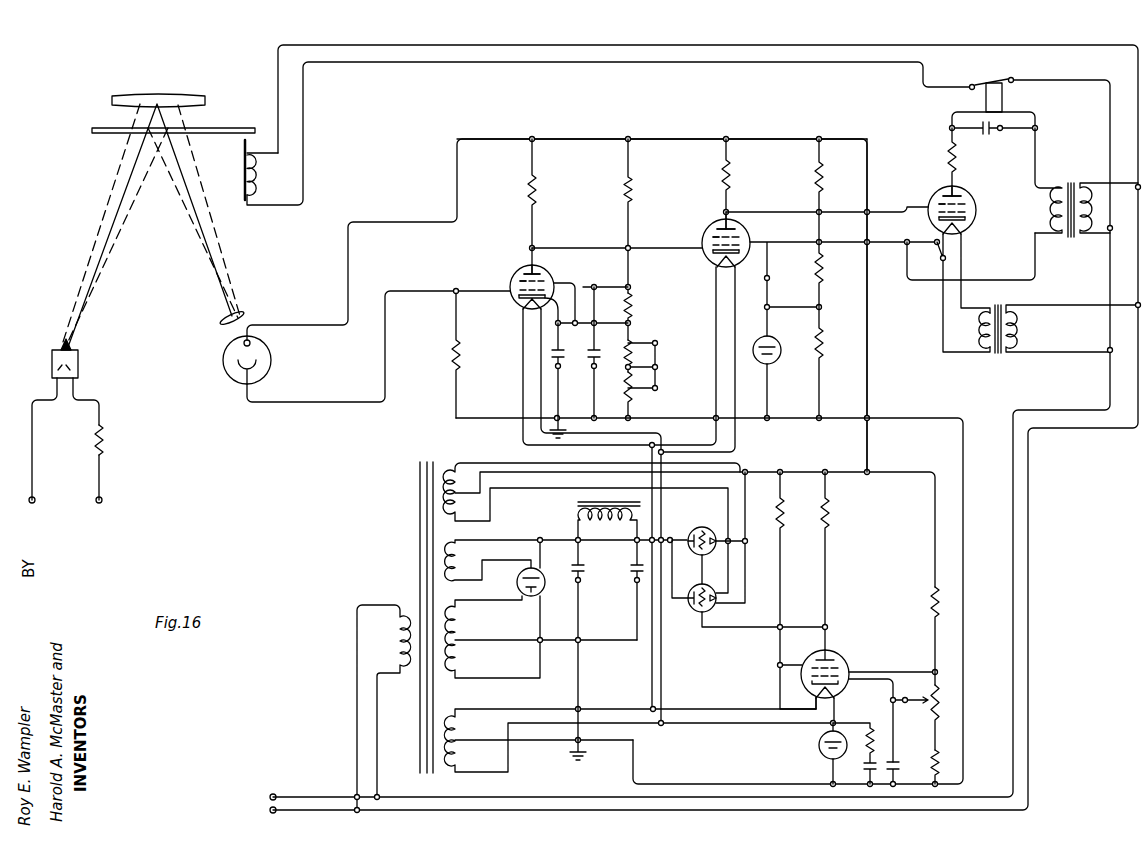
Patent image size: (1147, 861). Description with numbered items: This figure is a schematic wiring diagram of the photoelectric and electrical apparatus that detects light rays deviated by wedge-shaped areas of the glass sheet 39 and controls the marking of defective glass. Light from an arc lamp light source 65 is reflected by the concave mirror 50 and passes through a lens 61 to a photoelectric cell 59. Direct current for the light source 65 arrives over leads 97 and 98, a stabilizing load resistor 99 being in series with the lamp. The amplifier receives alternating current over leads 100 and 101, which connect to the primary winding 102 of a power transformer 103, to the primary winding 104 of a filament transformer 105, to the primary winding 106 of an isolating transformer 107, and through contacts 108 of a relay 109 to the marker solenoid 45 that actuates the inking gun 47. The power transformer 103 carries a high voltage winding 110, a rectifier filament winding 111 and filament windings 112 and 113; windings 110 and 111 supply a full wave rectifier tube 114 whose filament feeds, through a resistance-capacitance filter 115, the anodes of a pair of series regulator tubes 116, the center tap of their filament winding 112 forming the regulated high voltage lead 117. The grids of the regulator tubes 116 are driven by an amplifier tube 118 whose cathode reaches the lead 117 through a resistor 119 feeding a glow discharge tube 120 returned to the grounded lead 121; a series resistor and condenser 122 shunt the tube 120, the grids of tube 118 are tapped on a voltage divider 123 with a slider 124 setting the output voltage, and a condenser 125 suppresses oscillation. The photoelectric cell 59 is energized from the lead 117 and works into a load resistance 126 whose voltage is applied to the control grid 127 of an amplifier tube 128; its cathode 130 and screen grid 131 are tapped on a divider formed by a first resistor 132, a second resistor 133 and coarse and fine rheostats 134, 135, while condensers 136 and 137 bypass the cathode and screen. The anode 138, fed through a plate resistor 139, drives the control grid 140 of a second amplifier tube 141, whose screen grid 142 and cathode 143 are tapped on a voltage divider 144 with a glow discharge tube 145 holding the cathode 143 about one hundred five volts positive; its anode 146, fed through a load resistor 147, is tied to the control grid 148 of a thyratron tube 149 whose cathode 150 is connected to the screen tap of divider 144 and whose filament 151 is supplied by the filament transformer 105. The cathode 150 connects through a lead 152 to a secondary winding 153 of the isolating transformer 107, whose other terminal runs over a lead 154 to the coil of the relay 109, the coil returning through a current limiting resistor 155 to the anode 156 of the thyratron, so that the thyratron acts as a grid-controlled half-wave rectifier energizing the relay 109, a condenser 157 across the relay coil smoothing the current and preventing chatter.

The glass sheet 39 is at (105, 133).
The solenoid 45 is at (254, 178).
The inking gun 47 is at (242, 151).
The mirror 50 is at (112, 100).
The photoelectric cell 59 is at (272, 353).
The lens 61 is at (239, 311).
The arc lamp 65 is at (80, 356).
The lead 97 is at (32, 450).
The lead 98 is at (102, 481).
The stabilizing load resistor 99 is at (104, 447).
The lead 100 is at (305, 791).
The lead 101 is at (394, 809).
The primary winding 102 is at (398, 640).
The power transformer 103 is at (418, 551).
The primary winding 104 is at (1026, 332).
The filament transformer 105 is at (1003, 352).
The primary winding 106 is at (1095, 198).
The isolating transformer 107 is at (1072, 183).
The contacts 108 is at (966, 80).
The relay 109 is at (986, 98).
The high voltage winding 110 is at (458, 633).
The rectifier filament winding 111 is at (458, 552).
The filament winding 112 is at (458, 508).
The filament winding 113 is at (458, 727).
The full wave rectifier tube 114 is at (542, 592).
The resistance-capacitance filter 115 is at (605, 531).
The series regulator tubes 116 is at (690, 590).
The regulated high voltage lead 117 is at (680, 139).
The amplifier tube 118 is at (846, 660).
The resistor 119 is at (783, 521).
The glow discharge tube 120 is at (820, 752).
The grounded return lead 121 is at (693, 418).
The resistor and condenser 122 is at (875, 726).
The voltage divider 123 is at (928, 603).
The slider 124 is at (917, 717).
The condenser 125 is at (933, 752).
The load resistance 126 is at (461, 352).
The control grid 127 is at (531, 283).
The amplifier tube 128 is at (520, 268).
The cathode 130 is at (518, 306).
The screen grid 131 is at (549, 292).
The first resistor 132 is at (636, 187).
The second resistor 133 is at (636, 305).
The coarse control rheostat 134 is at (656, 344).
The fine control rheostat 135 is at (657, 393).
The condenser 136 is at (560, 370).
The condenser 137 is at (595, 362).
The anode 138 is at (545, 271).
The plate resistor 139 is at (538, 188).
The control grid 140 is at (733, 239).
The second amplifier tube 141 is at (720, 222).
The screen grid 142 is at (742, 258).
The cathode 143 is at (740, 262).
The voltage divider 144 is at (824, 178).
The glow discharge tube 145 is at (790, 333).
The anode 146 is at (750, 225).
The load resistor 147 is at (735, 171).
The control grid 148 is at (959, 210).
The screen grid thyratron tube 149 is at (932, 198).
The cathode 150 is at (928, 224).
The filament 151 is at (962, 229).
The lead 152 is at (975, 283).
The secondary winding 153 is at (1048, 214).
The lead 154 is at (1035, 118).
The current limiting resistor 155 is at (946, 156).
The anode 156 is at (957, 195).
The condenser 157 is at (993, 133).